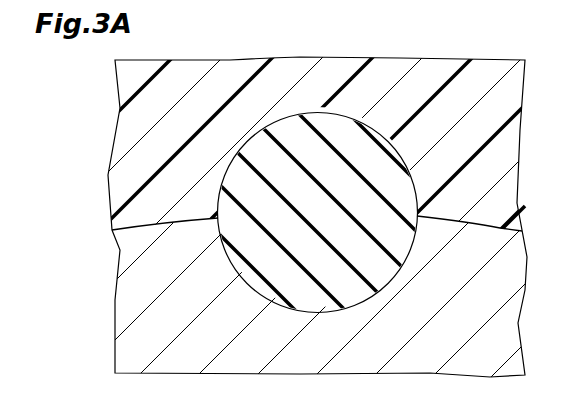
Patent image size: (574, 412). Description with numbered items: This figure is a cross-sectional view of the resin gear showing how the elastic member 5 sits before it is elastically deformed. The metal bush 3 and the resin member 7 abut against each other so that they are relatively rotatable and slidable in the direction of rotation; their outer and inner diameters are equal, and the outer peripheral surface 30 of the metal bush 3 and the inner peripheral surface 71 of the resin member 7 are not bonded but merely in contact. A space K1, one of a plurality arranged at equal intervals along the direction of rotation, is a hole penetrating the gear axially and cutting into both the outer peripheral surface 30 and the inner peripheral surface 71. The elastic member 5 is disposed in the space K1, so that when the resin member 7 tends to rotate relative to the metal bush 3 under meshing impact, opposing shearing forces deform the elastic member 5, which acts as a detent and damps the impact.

The metal bush 3 is at (512, 325).
The elastic member 5 is at (250, 180).
The resin member 7 is at (512, 140).
The outer peripheral surface 30 is at (486, 224).
The inner peripheral surface 71 is at (500, 231).
The space K1 is at (270, 122).